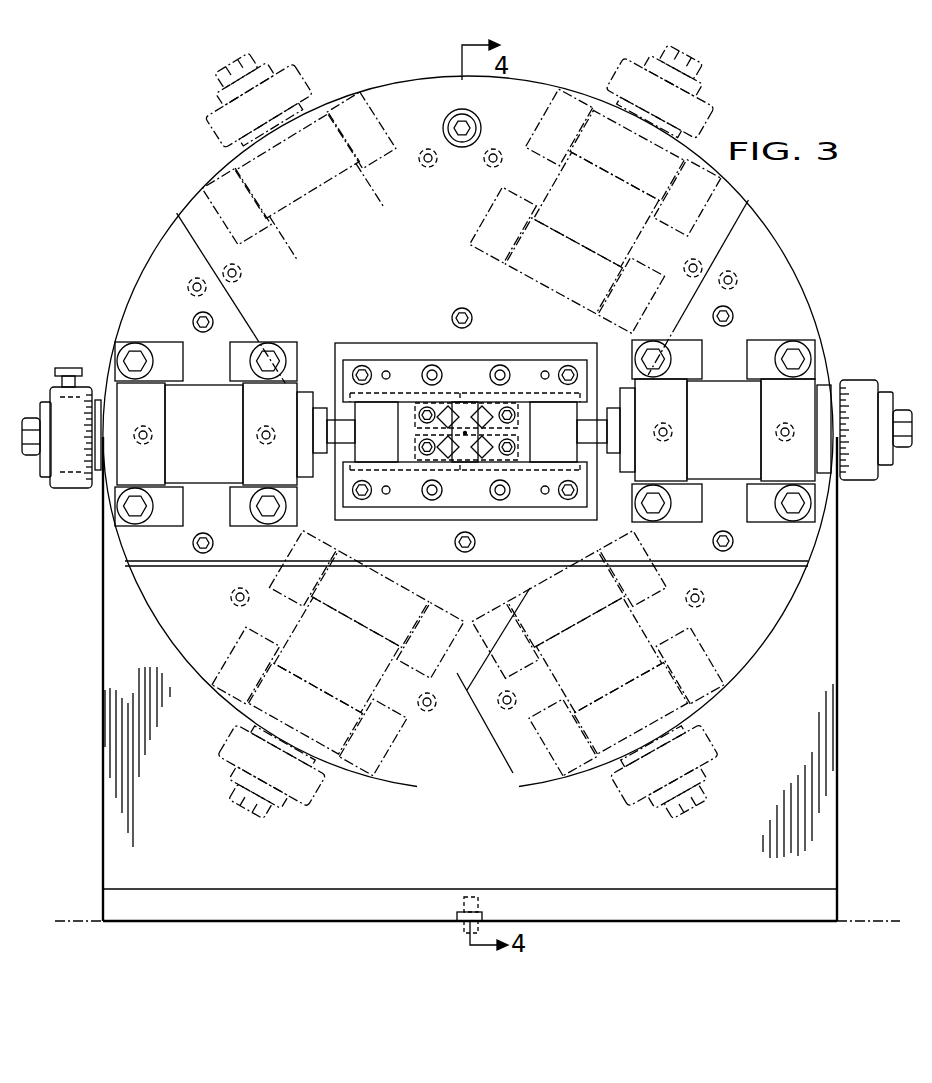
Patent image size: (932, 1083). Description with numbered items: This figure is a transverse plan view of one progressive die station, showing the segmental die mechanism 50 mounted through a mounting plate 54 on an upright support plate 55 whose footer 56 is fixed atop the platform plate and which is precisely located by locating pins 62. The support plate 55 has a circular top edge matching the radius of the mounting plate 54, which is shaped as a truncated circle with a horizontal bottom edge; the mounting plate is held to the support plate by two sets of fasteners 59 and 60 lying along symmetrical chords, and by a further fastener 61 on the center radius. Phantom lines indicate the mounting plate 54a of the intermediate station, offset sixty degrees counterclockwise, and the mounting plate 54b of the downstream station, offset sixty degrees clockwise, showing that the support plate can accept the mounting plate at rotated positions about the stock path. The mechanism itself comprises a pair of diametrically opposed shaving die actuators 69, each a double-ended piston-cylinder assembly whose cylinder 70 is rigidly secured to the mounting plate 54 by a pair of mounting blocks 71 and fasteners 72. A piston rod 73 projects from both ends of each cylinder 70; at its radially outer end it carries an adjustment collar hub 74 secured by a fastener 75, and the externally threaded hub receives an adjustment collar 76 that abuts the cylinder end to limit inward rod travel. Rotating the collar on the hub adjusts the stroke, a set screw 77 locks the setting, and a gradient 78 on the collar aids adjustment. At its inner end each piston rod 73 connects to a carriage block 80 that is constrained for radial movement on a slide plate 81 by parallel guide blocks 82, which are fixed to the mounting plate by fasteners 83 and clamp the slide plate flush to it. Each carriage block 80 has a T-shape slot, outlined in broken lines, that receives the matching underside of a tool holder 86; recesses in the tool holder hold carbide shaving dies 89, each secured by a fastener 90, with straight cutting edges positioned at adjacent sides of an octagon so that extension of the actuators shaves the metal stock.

The segmental die mechanism 50 is at (789, 311).
The mounting plate 54 is at (592, 566).
The mounting plate 54a is at (448, 730).
The mounting plate 54b is at (513, 770).
The upright support plate 55 is at (838, 640).
The footer 56 is at (600, 889).
The fasteners 59 is at (194, 323).
The fasteners 60 is at (193, 543).
The fastener 61 is at (470, 118).
The locating pins 62 is at (482, 906).
The shaving die actuators 69 is at (208, 380).
The cylinder 70 is at (200, 486).
The mounting blocks 71 is at (124, 343).
The fasteners 72 is at (149, 350).
The piston rod 73 is at (333, 442).
The adjustment collar hub 74 is at (62, 486).
The fastener 75 is at (28, 432).
The adjustment collar 76 is at (66, 490).
The set screw 77 is at (67, 368).
The gradient 78 is at (74, 439).
The carriage block 80 is at (352, 412).
The slide plate 81 is at (368, 318).
The guide blocks 82 is at (528, 360).
The fasteners 83 is at (500, 372).
The tool holder 86 is at (410, 430).
The carbide shaving dies 89 is at (482, 410).
The fastener 90 is at (482, 452).